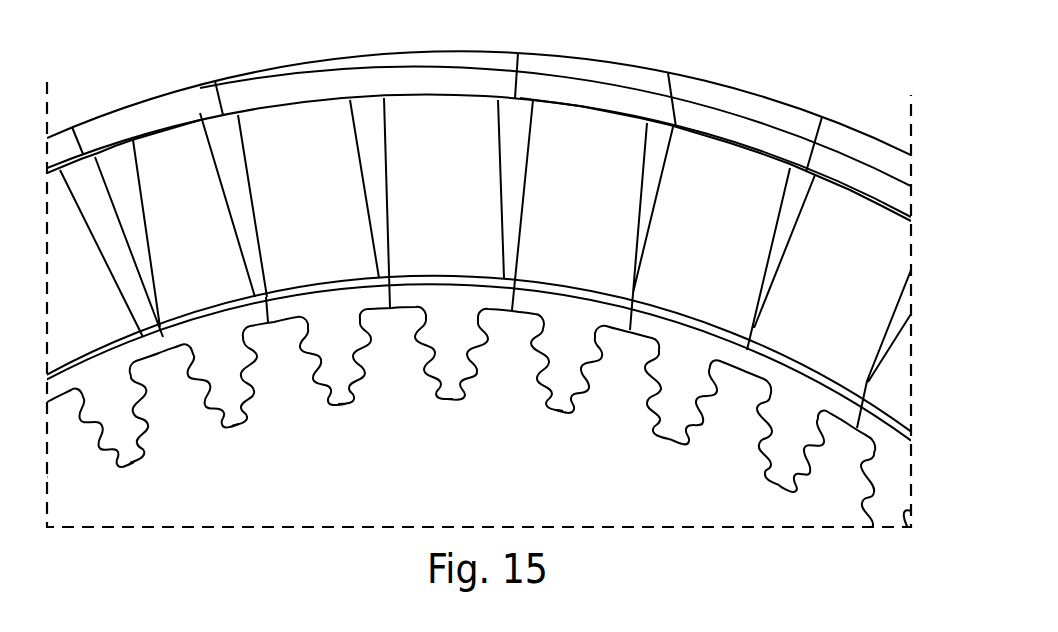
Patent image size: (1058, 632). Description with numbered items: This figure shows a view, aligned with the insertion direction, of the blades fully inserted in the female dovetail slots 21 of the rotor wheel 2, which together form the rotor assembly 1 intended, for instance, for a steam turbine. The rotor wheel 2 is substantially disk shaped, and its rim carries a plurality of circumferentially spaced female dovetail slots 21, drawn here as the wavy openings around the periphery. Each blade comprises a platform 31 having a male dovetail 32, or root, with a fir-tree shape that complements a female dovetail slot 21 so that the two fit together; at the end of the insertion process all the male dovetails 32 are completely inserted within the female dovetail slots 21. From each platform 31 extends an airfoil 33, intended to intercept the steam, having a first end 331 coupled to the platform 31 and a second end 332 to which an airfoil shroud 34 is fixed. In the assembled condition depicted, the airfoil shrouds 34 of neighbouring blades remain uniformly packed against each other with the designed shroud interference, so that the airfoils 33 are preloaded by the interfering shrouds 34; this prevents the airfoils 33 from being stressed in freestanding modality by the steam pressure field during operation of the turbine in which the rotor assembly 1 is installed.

The rotor assembly 1 is at (860, 40).
The rotor wheel 2 is at (581, 474).
The female dovetail slot 21 is at (320, 387).
The platform 31 is at (824, 404).
The male dovetail 32 is at (781, 447).
The airfoil 33 is at (179, 148).
The airfoil shroud 34 is at (197, 98).
The first end 331 is at (215, 277).
The second end 332 is at (165, 325).